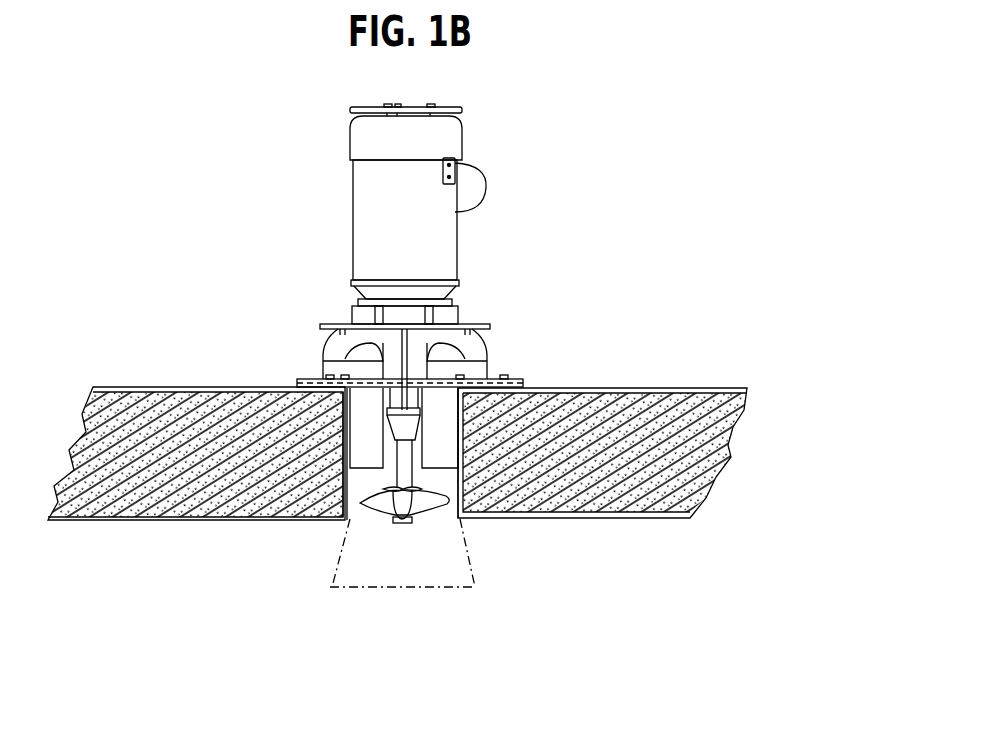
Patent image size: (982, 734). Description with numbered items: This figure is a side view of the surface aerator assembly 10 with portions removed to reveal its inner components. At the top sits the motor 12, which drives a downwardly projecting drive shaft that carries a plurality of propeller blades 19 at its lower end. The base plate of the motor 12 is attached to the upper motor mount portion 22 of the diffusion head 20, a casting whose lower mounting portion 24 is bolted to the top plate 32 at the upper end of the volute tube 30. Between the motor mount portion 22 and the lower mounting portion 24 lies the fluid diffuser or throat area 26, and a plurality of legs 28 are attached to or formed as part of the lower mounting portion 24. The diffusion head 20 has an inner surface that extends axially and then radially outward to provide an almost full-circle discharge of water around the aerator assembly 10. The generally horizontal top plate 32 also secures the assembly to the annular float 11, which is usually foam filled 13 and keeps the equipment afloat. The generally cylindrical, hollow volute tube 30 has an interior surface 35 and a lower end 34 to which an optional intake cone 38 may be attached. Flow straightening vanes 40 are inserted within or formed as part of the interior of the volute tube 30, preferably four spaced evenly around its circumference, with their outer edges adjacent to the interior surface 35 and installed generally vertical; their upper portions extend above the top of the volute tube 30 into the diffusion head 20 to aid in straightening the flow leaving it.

The aerator assembly 10 is at (492, 139).
The annular float 11 is at (596, 390).
The motor 12 is at (432, 241).
The foam fill 13 is at (680, 442).
The propeller blades 19 is at (428, 517).
The diffusion head 20 is at (531, 321).
The motor mount portion 22 is at (356, 301).
The lower mounting portion 24 is at (488, 372).
The fluid diffuser or throat area 26 is at (390, 345).
The legs 28 is at (468, 347).
The volute tube 30 is at (463, 517).
The top plate 32 is at (506, 381).
The lower end 34 is at (347, 520).
The interior surface 35 is at (358, 504).
The intake cone 38 is at (340, 590).
The flow straightening vanes 40 is at (365, 427).